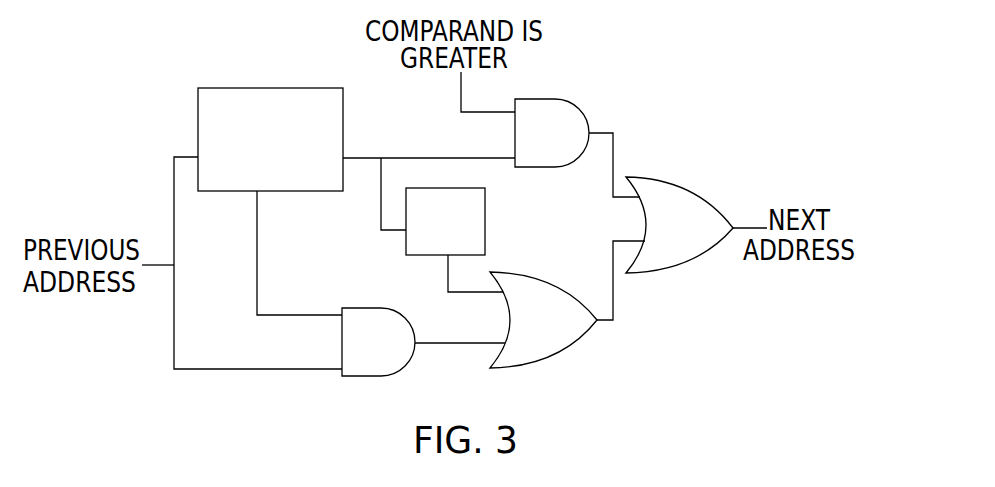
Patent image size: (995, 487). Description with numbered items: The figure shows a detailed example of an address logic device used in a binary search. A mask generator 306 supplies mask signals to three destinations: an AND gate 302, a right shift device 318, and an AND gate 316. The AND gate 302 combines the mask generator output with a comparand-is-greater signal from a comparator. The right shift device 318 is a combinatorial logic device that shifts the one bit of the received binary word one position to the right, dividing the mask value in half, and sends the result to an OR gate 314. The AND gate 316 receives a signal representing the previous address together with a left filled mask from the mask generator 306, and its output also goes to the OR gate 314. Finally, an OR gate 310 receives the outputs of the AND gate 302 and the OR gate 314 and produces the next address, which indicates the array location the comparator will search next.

The mask generator 306 is at (341, 186).
The AND gate 302 is at (565, 150).
The right shift device 318 is at (478, 248).
The OR gate 310 is at (697, 242).
The OR gate 314 is at (559, 336).
The AND gate 316 is at (392, 360).